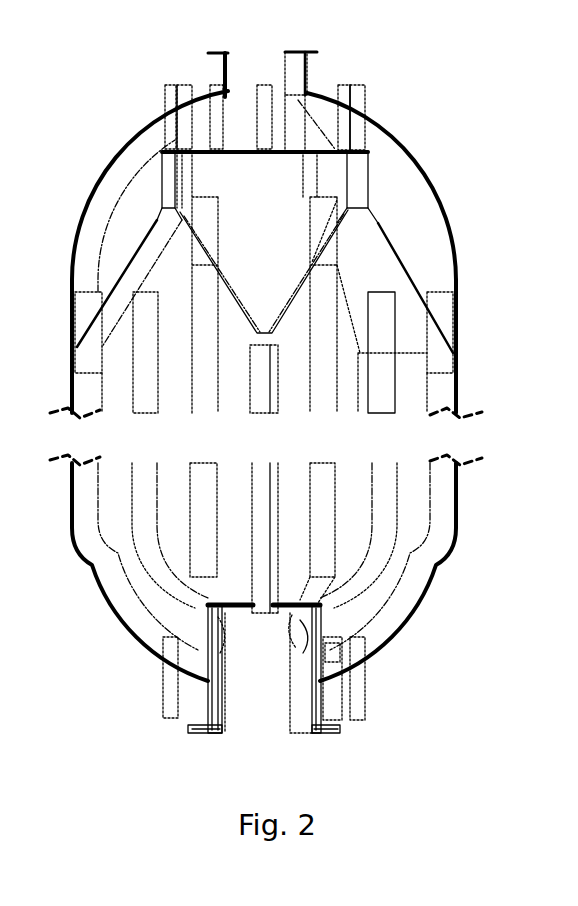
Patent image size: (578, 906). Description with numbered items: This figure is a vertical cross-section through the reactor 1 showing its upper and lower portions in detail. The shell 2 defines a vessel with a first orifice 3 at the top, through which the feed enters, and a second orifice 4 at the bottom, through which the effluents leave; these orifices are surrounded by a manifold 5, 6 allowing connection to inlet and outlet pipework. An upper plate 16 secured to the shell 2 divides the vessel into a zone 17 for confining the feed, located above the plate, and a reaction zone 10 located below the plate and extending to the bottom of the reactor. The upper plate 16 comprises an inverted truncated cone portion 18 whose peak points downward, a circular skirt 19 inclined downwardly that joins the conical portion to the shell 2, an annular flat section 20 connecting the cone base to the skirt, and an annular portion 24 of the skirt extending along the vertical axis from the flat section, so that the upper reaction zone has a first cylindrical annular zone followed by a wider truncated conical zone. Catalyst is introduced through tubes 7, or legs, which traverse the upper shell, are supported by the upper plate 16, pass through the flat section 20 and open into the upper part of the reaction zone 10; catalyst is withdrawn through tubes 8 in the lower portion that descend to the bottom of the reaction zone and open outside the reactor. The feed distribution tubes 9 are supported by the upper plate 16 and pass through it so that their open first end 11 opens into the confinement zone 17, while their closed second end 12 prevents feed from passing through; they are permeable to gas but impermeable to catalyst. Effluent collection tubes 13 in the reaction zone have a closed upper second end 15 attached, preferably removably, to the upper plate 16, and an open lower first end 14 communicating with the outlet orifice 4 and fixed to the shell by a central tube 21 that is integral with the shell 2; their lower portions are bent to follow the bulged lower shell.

The reactor 1 is at (487, 207).
The shell 2 is at (80, 213).
The first orifice 3 is at (247, 83).
The second orifice 4 is at (262, 708).
The manifold 5 is at (305, 68).
The manifold 6 is at (210, 712).
The tubes for introducing catalyst 7 is at (168, 98).
The tubes for evacuating catalyst 8 is at (358, 687).
The feed distribution tubes 9 is at (445, 363).
The reaction zone 10 is at (440, 553).
The first end 11 is at (200, 197).
The second end 12 is at (207, 576).
The effluent collection tubes 13 is at (383, 487).
The lower first end 14 is at (303, 632).
The upper second end 15 is at (381, 292).
The upper plate 16 is at (297, 270).
The zone for confining the feed 17 is at (380, 158).
The inverted truncated cone portion 18 is at (241, 241).
The circular skirt 19 is at (125, 283).
The annular flat section 20 is at (167, 149).
The central tube 21 is at (317, 697).
The annular portion 24 is at (165, 172).